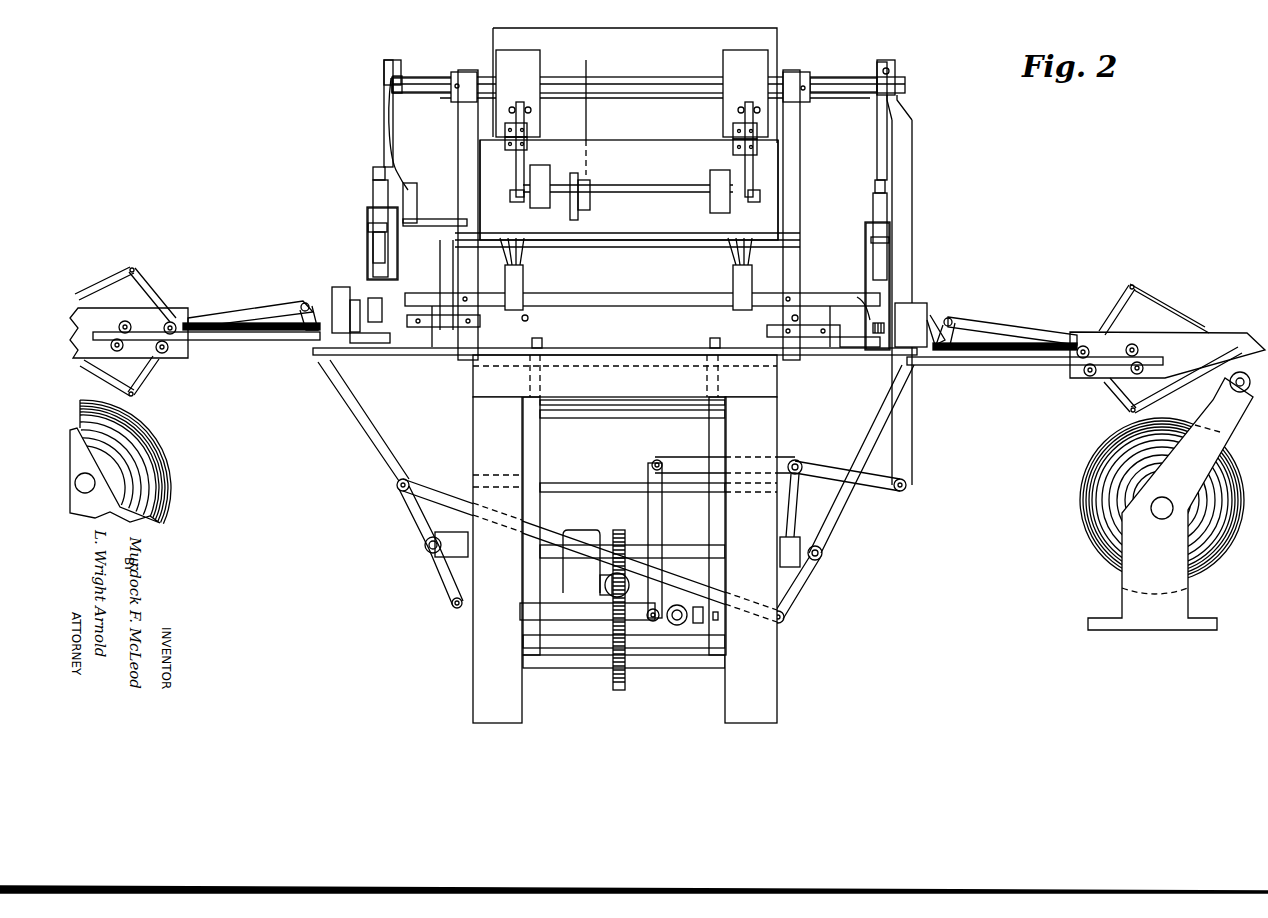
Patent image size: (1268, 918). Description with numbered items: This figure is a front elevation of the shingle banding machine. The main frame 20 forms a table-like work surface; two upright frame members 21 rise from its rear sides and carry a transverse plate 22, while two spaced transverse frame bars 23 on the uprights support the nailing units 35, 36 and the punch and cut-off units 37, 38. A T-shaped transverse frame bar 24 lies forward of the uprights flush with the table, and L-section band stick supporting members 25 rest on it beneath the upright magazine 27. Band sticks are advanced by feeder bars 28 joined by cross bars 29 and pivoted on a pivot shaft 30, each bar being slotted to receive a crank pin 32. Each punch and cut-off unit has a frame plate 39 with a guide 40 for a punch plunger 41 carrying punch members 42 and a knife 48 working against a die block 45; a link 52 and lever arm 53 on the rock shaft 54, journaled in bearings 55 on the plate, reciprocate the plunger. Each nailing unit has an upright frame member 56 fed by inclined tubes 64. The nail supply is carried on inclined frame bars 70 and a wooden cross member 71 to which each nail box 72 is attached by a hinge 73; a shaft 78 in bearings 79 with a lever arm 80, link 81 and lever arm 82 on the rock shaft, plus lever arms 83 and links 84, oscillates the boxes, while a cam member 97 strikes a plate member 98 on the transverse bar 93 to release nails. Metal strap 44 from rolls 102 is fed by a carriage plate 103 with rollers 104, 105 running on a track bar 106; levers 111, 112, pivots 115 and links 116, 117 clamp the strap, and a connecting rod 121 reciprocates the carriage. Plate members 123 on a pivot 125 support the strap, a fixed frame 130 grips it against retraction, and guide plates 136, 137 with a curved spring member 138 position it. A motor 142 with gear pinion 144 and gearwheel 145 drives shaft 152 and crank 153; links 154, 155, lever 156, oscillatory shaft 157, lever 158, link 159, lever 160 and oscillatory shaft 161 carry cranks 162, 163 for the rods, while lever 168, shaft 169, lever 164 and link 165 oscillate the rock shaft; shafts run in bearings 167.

The main frame 20 is at (768, 690).
The upright frame members 21 is at (458, 110).
The plate 22 is at (680, 92).
The transverse frame bars 23 is at (616, 305).
The transverse frame bar 24 is at (443, 358).
The band stick supporting members 25 is at (499, 358).
The upright magazine 27 is at (656, 30).
The feeder bars 28 is at (709, 346).
The cross bars 29 is at (613, 410).
The pivot shaft 30 is at (595, 483).
The crank pin 32 is at (784, 620).
The nailing unit 35 is at (722, 278).
The nailing unit 36 is at (535, 279).
The punch and cut-off unit 37 is at (914, 278).
The punch and cut-off unit 38 is at (343, 273).
The frame plate 39 is at (368, 208).
The guide 40 is at (368, 226).
The punch plunger 41 is at (373, 244).
The punch members 42 is at (857, 297).
The metal strap 44 is at (1205, 440).
The die block 45 is at (385, 345).
The knife 48 is at (372, 310).
The link 52 is at (385, 97).
The lever arm 53 is at (392, 62).
The rock shaft 54 is at (420, 78).
The bearings 55 is at (462, 74).
The frame member 56 is at (518, 298).
The inclined tubes 64 is at (510, 238).
The inclined frame bars 70 is at (786, 168).
The cross member 71 is at (786, 154).
The nail box 72 is at (520, 52).
The hinge 73 is at (528, 134).
The shaft 78 is at (660, 186).
The bearings 79 is at (545, 170).
The lever arm 80 is at (578, 214).
The link 81 is at (590, 136).
The lever arm 82 is at (560, 64).
The lever arms 83 is at (508, 185).
The links 84 is at (510, 160).
The transverse bar 93 is at (441, 219).
The cam member 97 is at (398, 176).
The plate member 98 is at (418, 202).
The rolls 102 is at (173, 468).
The carriage plate 103 is at (165, 310).
The rollers 104 is at (165, 355).
The rollers 105 is at (123, 321).
The track bar 106 is at (266, 342).
The lever 111 is at (152, 284).
The lever 112 is at (150, 378).
The pivots 115 is at (132, 266).
The link 116 is at (101, 284).
The link 117 is at (96, 378).
The connecting rod 121 is at (240, 308).
The plate members 123 is at (252, 332).
The pivot 125 is at (304, 302).
The fixed frame 130 is at (337, 292).
The guide plate 136 is at (432, 332).
The guide plate 137 is at (440, 310).
The curved spring member 138 is at (528, 320).
The motor 142 is at (586, 530).
The gear pinion 144 is at (604, 580).
The gearwheel 145 is at (620, 532).
The shaft 152 is at (678, 626).
The crank 153 is at (664, 626).
The link 154 is at (572, 618).
The link 155 is at (650, 504).
The lever 156 is at (445, 578).
The oscillatory shaft 157 is at (425, 546).
The lever 158 is at (415, 517).
The link 159 is at (433, 490).
The lever 160 is at (805, 584).
The oscillatory shaft 161 is at (823, 553).
The crank 162 is at (370, 432).
The crank 163 is at (852, 508).
The lever 164 is at (830, 473).
The link 165 is at (914, 170).
The bearings 167 is at (793, 536).
The lever 168 is at (680, 458).
The shaft 169 is at (799, 460).